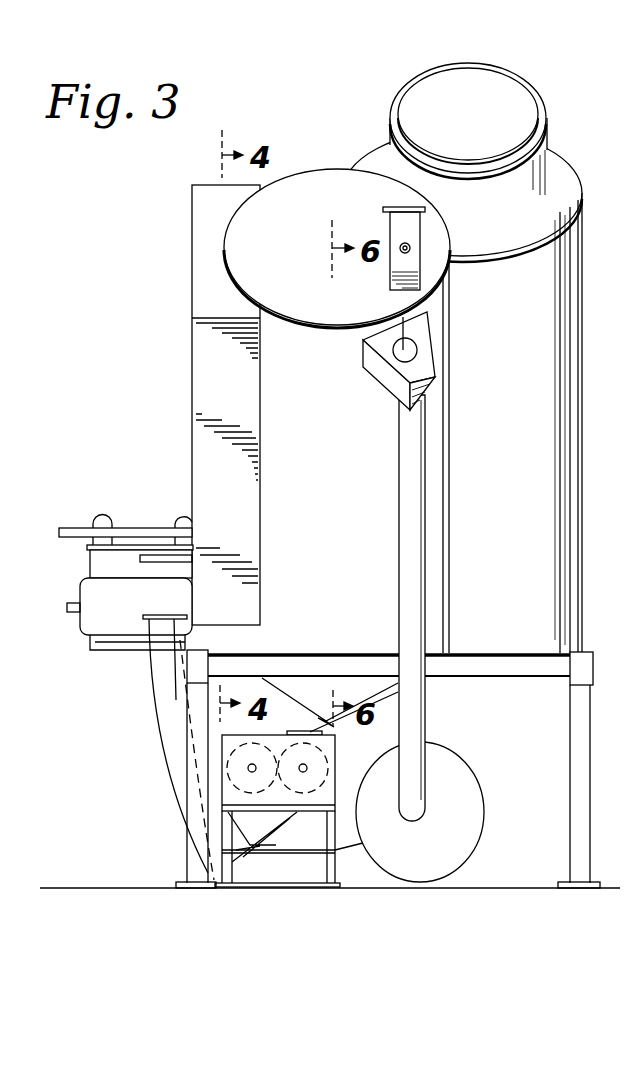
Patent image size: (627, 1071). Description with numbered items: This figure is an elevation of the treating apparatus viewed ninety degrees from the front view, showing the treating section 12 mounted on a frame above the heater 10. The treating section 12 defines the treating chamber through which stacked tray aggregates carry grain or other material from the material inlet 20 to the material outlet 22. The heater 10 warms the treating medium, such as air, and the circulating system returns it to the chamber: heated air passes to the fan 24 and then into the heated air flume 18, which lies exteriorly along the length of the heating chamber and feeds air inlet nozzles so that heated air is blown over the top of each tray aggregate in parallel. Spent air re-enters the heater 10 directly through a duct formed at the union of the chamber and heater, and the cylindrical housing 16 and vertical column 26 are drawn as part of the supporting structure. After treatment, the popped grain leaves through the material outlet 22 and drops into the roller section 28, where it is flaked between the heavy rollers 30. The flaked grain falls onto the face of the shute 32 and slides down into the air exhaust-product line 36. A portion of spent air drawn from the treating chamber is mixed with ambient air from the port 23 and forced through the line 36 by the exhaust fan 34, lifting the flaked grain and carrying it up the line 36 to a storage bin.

The heater 10 is at (546, 110).
The treating section 12 is at (341, 169).
The cylindrical housing with flange 16 is at (450, 290).
The heated air flume 18 is at (192, 297).
The material inlet 20 is at (388, 224).
The material outlet 22 is at (340, 725).
The port 23 is at (417, 350).
The fan 24 is at (80, 590).
The vertical column 26 is at (398, 458).
The roller section 28 is at (221, 745).
The heavy rollers 30 is at (232, 776).
The shute 32 is at (272, 828).
The exhaust fan 34 is at (467, 822).
The air exhaust-product line 36 is at (274, 868).